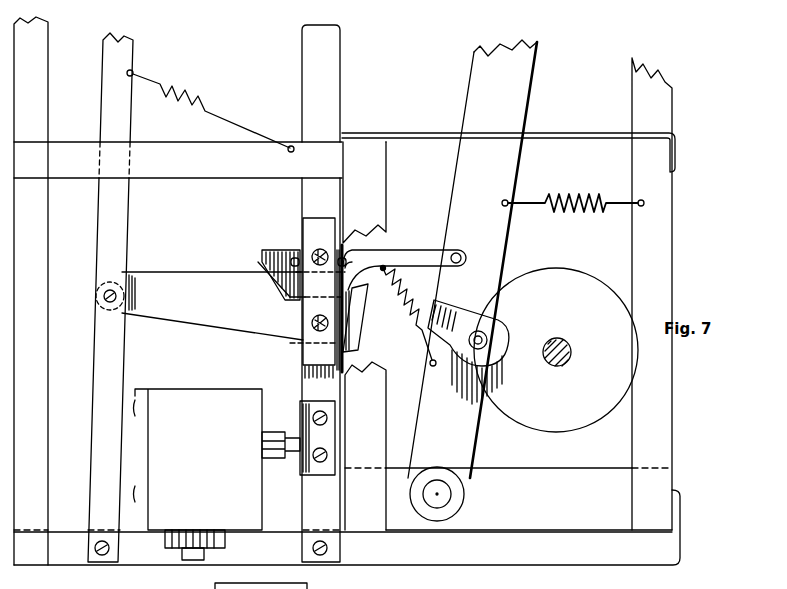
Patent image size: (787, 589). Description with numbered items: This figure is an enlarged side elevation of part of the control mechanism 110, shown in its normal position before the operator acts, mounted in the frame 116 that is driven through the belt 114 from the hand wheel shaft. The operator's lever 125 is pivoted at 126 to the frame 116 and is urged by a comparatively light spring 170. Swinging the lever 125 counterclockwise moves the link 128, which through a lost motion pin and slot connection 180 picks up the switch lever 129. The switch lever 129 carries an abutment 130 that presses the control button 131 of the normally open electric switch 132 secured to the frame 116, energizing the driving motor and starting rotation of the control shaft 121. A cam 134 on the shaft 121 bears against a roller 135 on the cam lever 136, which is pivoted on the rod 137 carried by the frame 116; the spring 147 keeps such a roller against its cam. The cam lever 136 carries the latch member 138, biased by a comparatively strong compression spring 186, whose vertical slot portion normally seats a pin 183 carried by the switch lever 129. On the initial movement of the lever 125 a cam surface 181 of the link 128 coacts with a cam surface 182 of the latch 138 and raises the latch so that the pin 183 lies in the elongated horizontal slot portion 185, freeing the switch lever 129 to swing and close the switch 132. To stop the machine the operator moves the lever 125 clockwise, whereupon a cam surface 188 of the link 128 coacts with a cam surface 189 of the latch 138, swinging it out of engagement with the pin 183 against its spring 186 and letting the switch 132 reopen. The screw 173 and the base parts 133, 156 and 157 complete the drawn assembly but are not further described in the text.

The control mechanism 110 is at (738, 165).
The belt 114 is at (567, 584).
The frame 116 is at (77, 172).
The control shaft 121 is at (561, 340).
The lever 125 is at (105, 92).
The pivot 126 is at (95, 549).
The link 128 is at (191, 272).
The second lever 129 is at (303, 57).
The abutment 130 is at (300, 474).
The control button 131 is at (262, 443).
The electric switch 132 is at (198, 459).
The motor shaft 133 is at (194, 561).
The cam 134 is at (556, 350).
The roller 135 is at (478, 320).
The lever 136 is at (506, 251).
The rod 137 is at (452, 494).
The latch member 138 is at (405, 260).
The spring 147 is at (583, 195).
The base 156 is at (668, 588).
The base support 157 is at (624, 583).
The spring 170 is at (210, 108).
The pivot screw 173 is at (306, 336).
The pin and slot connection 180 is at (310, 332).
The cam surface 181 is at (350, 302).
The cam surface 182 is at (352, 264).
The pin 183 is at (320, 248).
The horizontal portion 185 is at (281, 261).
The compression spring 186 is at (411, 312).
The cam surface 188 is at (266, 280).
The cam surface 189 is at (265, 261).